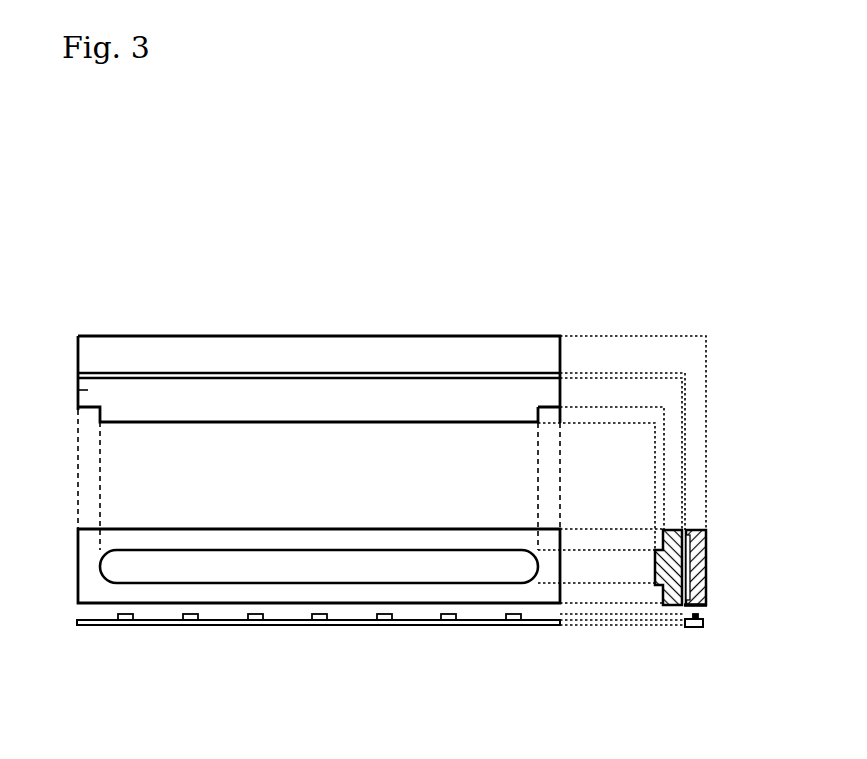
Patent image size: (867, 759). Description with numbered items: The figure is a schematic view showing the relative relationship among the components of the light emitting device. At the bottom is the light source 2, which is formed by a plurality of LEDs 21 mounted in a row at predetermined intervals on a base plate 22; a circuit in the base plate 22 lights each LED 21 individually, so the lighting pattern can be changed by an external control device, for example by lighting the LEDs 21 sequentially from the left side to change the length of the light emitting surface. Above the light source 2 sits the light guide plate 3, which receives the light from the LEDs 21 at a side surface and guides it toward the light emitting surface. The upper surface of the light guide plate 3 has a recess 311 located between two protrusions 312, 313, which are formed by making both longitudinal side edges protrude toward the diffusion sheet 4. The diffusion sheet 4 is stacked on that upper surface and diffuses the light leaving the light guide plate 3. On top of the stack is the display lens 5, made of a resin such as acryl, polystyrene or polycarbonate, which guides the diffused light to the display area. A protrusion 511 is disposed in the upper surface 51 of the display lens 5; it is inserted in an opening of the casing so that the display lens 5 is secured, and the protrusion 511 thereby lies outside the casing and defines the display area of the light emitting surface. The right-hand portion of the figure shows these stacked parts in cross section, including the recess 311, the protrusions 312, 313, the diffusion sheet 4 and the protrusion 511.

The light source 2 is at (545, 627).
The LEDs 21 is at (694, 628).
The base plate 22 is at (88, 627).
The light guide plate 3 is at (87, 347).
The recess 311 is at (692, 570).
The protrusion 312 is at (688, 536).
The protrusion 313 is at (700, 606).
The diffusion sheet 4 is at (88, 376).
The display lens 5 is at (78, 390).
The upper surface 51 is at (128, 542).
The protrusion 511 is at (257, 412).